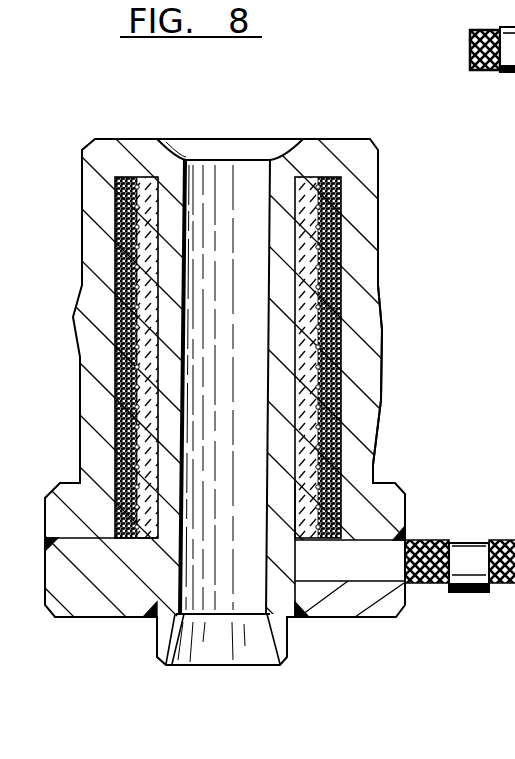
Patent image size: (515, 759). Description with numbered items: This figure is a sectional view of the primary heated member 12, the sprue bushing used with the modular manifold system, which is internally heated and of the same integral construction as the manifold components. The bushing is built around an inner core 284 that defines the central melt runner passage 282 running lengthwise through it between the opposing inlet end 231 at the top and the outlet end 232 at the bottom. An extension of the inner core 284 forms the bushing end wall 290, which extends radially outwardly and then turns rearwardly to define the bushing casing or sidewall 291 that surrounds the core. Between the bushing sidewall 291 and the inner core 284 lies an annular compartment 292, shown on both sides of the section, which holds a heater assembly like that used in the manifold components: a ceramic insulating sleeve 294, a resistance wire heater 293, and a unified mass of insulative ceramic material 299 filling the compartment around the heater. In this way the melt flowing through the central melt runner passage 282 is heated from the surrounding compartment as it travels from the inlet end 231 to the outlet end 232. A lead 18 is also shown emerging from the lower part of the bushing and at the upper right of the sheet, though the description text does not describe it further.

The primary heated member 12 is at (83, 251).
The cable 18 is at (460, 309).
The inlet end 231 is at (183, 149).
The outlet end 232 is at (203, 647).
The central melt runner passage 282 is at (247, 259).
The inner core 284 is at (270, 183).
The bushing end wall 290 is at (320, 163).
The bushing sidewall 291 is at (379, 248).
The annular compartment 292 is at (120, 430).
The resistance wire heater 293 is at (335, 322).
The ceramic insulating sleeve 294 is at (308, 282).
The insulative ceramic material 299 is at (333, 418).